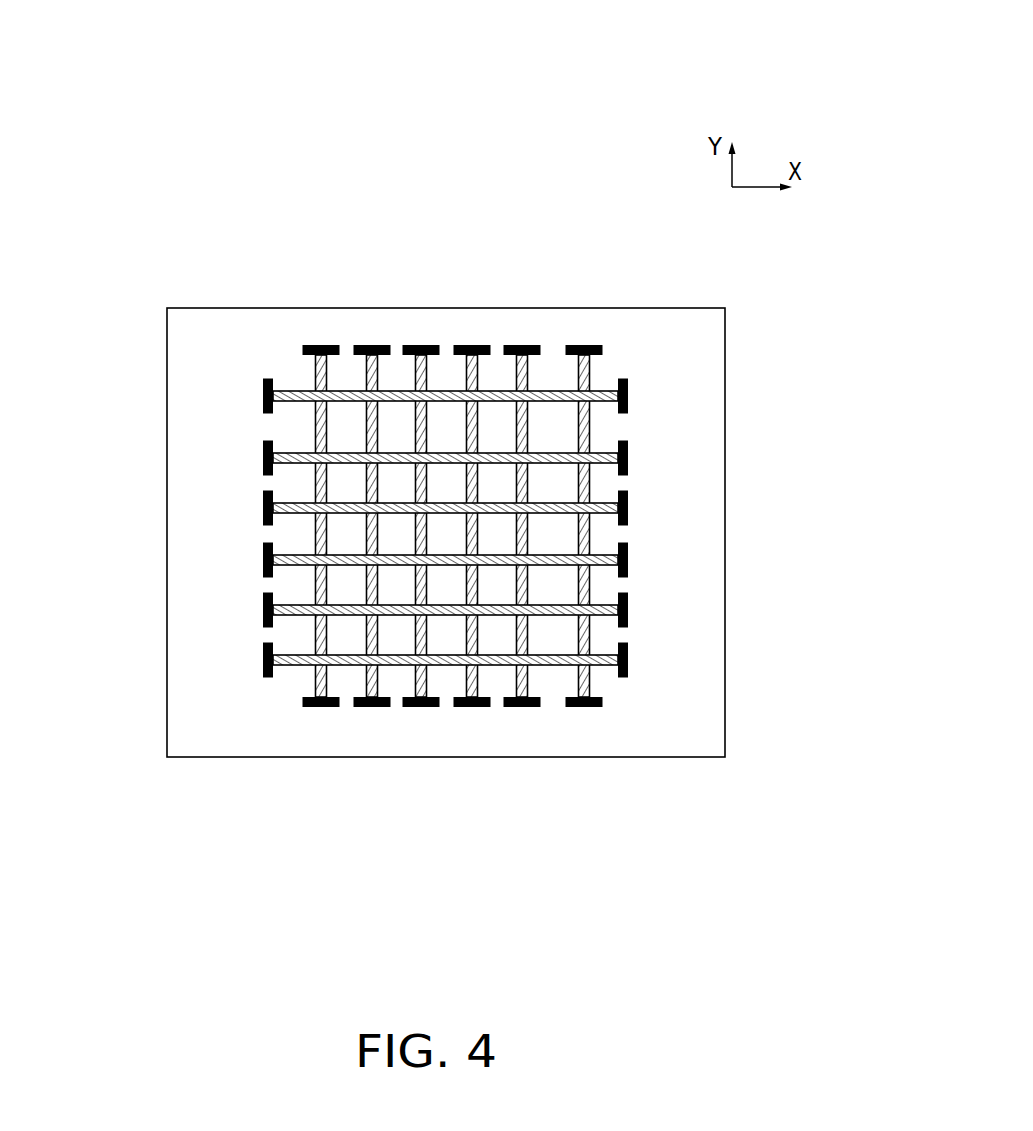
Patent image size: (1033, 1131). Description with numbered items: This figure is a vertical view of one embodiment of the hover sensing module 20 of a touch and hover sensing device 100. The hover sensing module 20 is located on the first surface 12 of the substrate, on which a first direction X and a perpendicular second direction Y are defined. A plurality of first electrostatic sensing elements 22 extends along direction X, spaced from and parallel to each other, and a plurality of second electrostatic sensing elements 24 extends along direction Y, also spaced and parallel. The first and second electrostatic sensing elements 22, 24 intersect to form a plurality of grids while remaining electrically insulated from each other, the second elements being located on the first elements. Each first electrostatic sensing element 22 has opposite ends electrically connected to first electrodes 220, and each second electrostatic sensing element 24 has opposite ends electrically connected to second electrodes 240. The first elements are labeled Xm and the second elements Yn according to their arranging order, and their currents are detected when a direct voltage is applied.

The touch and hover sensing device 100 is at (516, 72).
The first surface 12 is at (205, 548).
The hover sensing module 20 is at (272, 185).
The first electrostatic sensing element 22 is at (288, 400).
The first electrode 220 is at (317, 370).
The second electrostatic sensing element 24 is at (263, 378).
The second electrode 240 is at (322, 372).